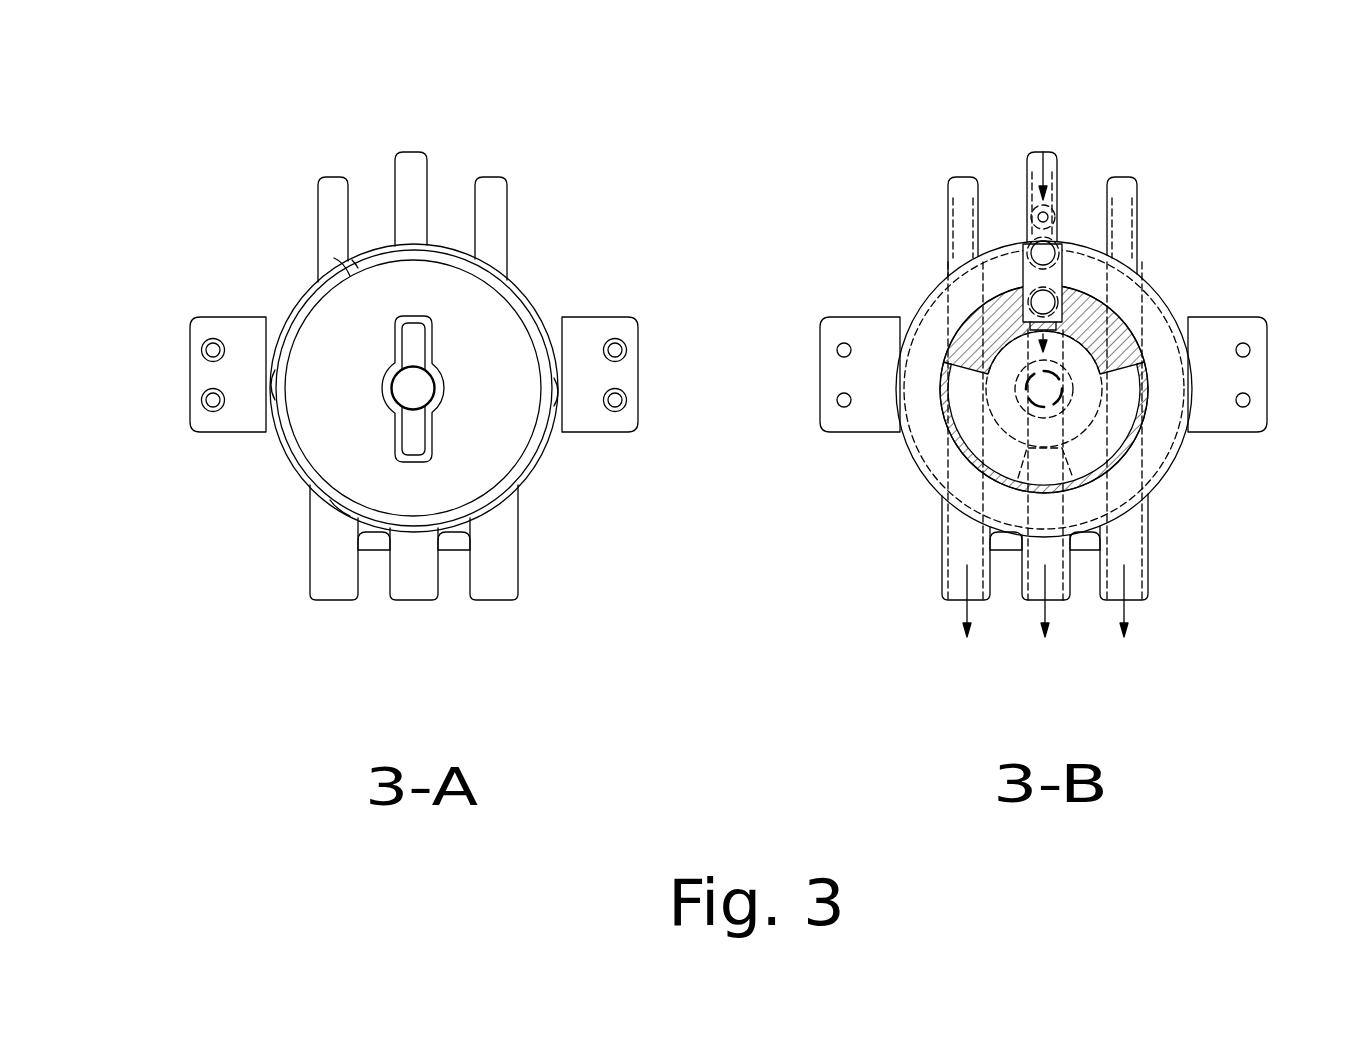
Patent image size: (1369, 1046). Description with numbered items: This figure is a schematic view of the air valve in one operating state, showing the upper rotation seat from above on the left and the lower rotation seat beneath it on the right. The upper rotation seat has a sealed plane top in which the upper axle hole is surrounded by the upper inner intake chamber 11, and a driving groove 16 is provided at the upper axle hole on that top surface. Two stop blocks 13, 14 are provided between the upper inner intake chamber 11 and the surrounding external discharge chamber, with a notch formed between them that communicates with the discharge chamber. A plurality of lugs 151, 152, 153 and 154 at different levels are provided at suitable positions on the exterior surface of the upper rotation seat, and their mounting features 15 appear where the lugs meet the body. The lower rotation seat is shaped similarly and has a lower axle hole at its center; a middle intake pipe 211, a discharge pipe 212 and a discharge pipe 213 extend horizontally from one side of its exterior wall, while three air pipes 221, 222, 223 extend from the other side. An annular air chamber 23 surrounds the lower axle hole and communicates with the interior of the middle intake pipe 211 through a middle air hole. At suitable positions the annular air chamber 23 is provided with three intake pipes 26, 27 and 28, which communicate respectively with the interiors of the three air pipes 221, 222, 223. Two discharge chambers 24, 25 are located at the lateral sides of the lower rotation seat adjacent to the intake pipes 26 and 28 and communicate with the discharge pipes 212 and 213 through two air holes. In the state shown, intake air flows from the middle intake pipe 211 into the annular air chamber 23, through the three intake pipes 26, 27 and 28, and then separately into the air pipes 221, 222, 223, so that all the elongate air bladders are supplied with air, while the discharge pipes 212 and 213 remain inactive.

The upper inner intake chamber 11 is at (967, 415).
The stop block 13 is at (980, 306).
The stop block 14 is at (1110, 302).
The cover 15 is at (414, 397).
The driving groove 16 is at (416, 343).
The annular air chamber 23 is at (1087, 400).
The discharge chamber 24 is at (918, 378).
The discharge chamber 25 is at (1167, 385).
The intake pipe 26 is at (960, 355).
The intake pipe 27 is at (1035, 472).
The intake pipe 28 is at (1125, 352).
The lug 151 is at (343, 265).
The lug 152 is at (558, 393).
The lug 153 is at (338, 515).
The lug 154 is at (271, 386).
The middle intake pipe 211 is at (410, 152).
The discharge pipe 212 is at (333, 177).
The discharge pipe 213 is at (492, 177).
The air pipe 221 is at (333, 600).
The air pipe 222 is at (413, 600).
The air pipe 223 is at (495, 600).